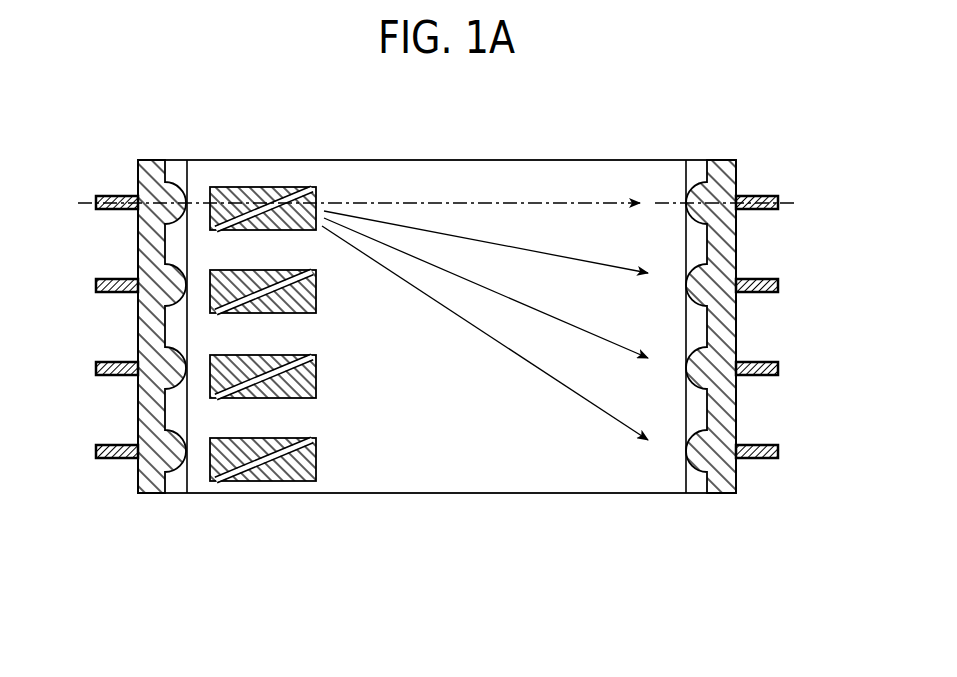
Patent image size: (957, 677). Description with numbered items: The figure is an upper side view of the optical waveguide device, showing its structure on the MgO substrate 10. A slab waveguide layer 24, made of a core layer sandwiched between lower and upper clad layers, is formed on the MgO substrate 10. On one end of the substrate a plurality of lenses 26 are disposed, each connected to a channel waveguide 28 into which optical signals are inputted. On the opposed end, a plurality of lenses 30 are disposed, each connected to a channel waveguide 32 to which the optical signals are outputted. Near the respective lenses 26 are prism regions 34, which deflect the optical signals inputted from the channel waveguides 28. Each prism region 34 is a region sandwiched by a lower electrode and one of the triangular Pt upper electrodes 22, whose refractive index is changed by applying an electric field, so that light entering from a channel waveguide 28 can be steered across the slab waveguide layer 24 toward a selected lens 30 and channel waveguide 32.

The MgO substrate 10 is at (620, 150).
The upper electrodes 22 is at (276, 186).
The slab waveguide layer 24 is at (500, 494).
The lenses 26 is at (177, 216).
The channel waveguides 28 is at (114, 195).
The lenses 30 is at (700, 218).
The channel waveguides 32 is at (762, 195).
The prism regions 34 is at (233, 182).